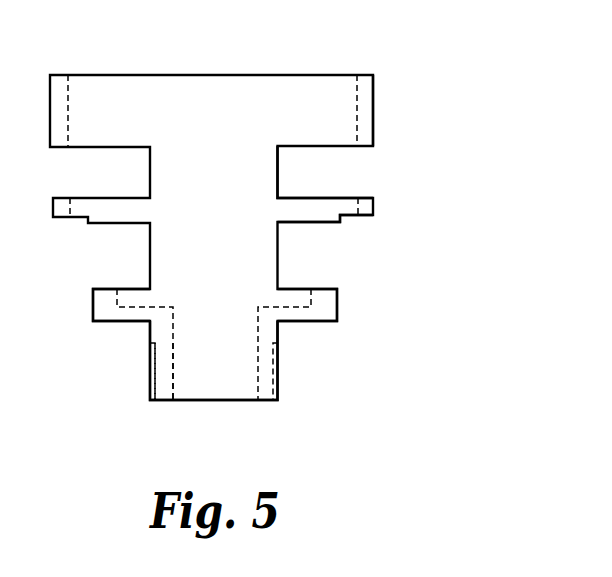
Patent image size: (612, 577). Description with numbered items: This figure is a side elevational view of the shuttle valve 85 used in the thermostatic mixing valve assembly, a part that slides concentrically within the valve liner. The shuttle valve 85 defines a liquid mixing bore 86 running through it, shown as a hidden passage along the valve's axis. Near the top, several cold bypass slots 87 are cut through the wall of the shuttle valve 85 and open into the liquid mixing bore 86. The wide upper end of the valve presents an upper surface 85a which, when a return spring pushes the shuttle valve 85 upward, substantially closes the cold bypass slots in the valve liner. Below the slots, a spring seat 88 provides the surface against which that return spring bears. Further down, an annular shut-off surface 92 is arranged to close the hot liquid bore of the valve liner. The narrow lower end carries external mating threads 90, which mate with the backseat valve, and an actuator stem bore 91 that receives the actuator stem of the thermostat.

The shuttle valve 85 is at (378, 204).
The upper surface 85a is at (368, 100).
The liquid mixing bore 86 is at (357, 100).
The cold bypass slots 87 is at (325, 147).
The spring seat 88 is at (352, 222).
The external mating threads 90 is at (279, 372).
The actuator stem bore 91 is at (173, 363).
The annular shut-off surface 92 is at (322, 321).